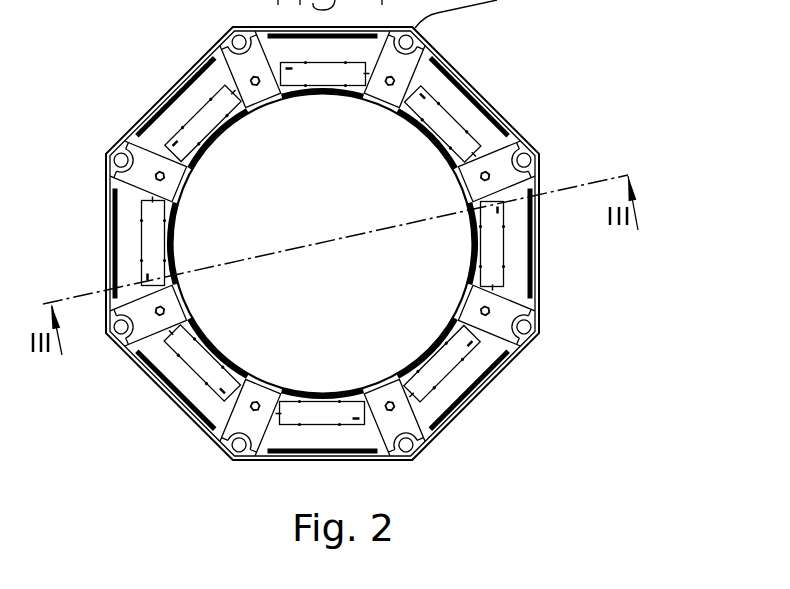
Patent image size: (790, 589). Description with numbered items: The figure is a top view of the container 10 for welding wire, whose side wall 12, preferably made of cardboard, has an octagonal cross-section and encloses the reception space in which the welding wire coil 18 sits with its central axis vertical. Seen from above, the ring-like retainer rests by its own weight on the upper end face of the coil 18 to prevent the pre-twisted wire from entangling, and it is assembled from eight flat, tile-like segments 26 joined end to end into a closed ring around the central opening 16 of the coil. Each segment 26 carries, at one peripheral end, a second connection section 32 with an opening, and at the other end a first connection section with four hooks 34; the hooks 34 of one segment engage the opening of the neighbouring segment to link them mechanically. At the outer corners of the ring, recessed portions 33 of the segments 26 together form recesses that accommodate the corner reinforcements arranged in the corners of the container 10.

The container 10 is at (513, 430).
The side wall 12 is at (472, 83).
The central opening 16 is at (309, 183).
The welding wire coil 18 is at (533, 243).
The segment 26 is at (197, 392).
The second connection section 32 is at (470, 305).
The recessed portion 33 is at (532, 144).
The hook 34 is at (257, 412).